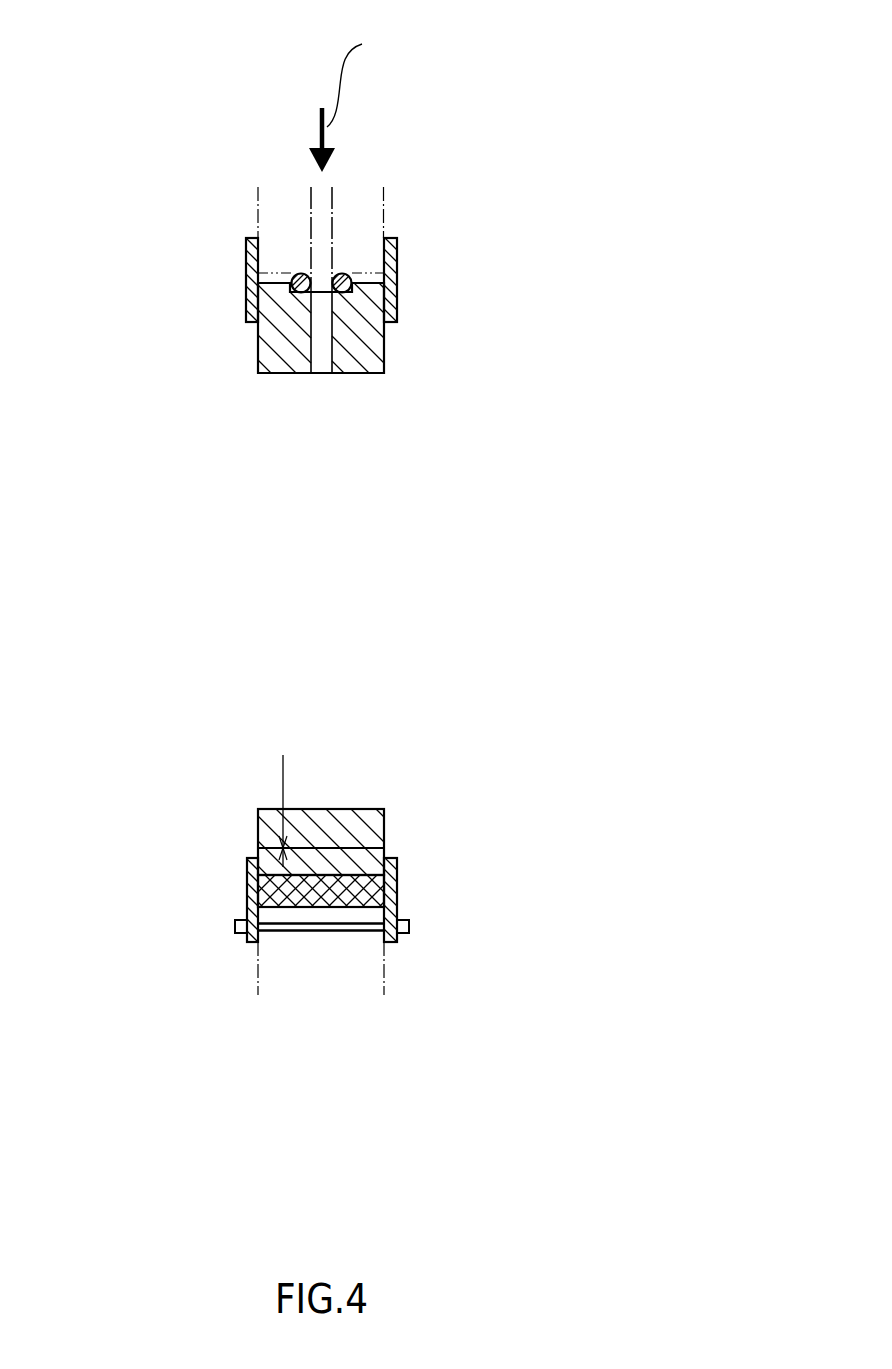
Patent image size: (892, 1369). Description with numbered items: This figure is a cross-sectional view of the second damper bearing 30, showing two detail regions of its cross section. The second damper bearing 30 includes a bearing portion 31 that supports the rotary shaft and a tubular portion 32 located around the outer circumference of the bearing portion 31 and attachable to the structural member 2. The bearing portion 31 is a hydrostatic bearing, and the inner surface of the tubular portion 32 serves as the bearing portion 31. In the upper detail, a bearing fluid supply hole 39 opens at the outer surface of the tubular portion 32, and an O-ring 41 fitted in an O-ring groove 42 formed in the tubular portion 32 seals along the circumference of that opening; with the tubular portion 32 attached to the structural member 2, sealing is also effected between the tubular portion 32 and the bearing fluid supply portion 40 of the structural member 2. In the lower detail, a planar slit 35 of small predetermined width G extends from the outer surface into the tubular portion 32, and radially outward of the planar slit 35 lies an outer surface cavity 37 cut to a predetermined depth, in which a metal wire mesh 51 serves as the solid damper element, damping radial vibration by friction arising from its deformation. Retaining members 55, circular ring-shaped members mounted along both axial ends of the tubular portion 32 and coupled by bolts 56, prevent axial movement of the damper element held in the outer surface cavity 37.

The structural member 2 is at (286, 227).
The second damper bearing 30 is at (550, 142).
The bearing portion 31 is at (355, 375).
The tubular portion 32 is at (258, 342).
The planar slit 35 is at (348, 847).
The outer surface cavity 37 is at (266, 883).
The bearing fluid supply hole 39 is at (342, 343).
The bearing fluid supply portion 40 is at (332, 205).
The O-ring 41 is at (343, 275).
The O-ring groove 42 is at (352, 300).
The wire mesh 51 is at (340, 897).
The retaining member 55 is at (246, 253).
The bolt 56 is at (409, 928).